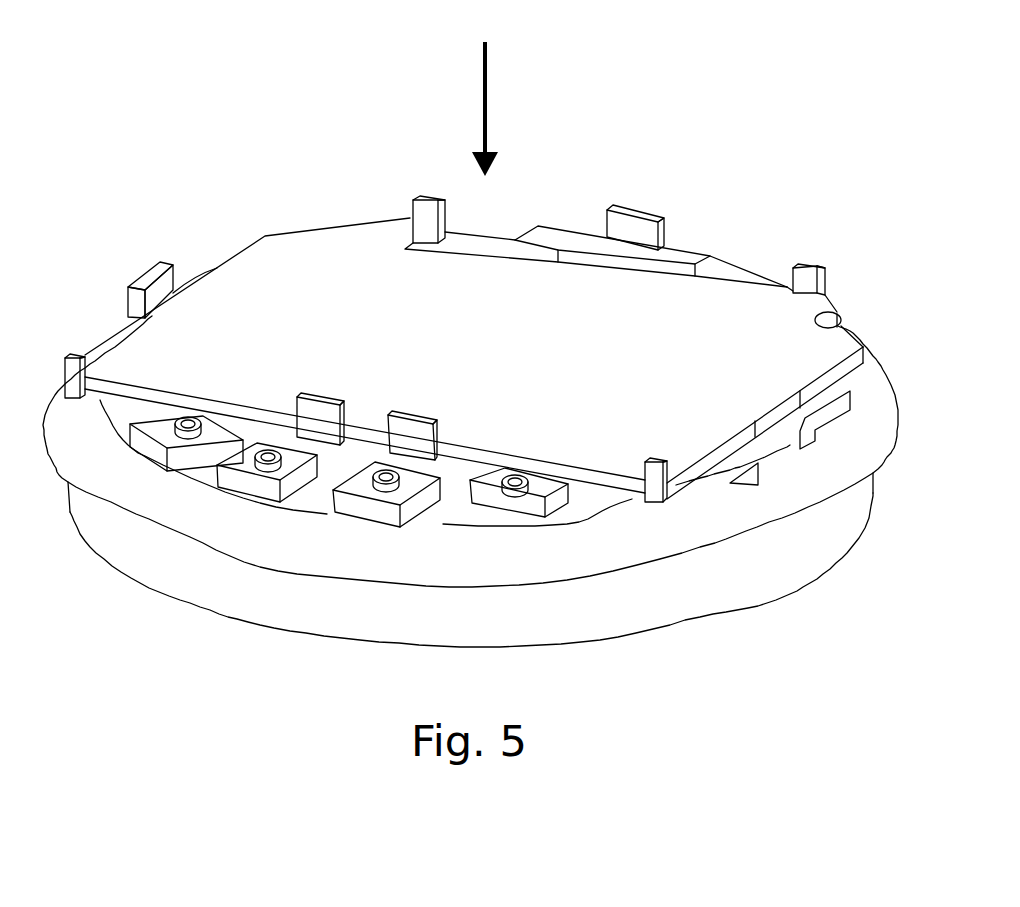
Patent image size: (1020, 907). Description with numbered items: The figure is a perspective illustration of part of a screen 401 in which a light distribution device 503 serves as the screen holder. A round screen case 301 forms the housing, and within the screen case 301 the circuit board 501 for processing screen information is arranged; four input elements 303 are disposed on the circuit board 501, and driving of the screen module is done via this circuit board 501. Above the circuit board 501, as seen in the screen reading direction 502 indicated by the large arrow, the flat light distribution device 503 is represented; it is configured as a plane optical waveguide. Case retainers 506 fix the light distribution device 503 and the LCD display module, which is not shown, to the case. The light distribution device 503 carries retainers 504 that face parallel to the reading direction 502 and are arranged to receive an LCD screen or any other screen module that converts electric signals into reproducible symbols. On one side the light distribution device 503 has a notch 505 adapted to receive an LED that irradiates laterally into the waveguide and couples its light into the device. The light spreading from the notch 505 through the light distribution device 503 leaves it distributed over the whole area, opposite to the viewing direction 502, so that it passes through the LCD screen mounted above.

The screen case 301 is at (156, 594).
The input elements 303 is at (505, 512).
The screen 401 is at (89, 238).
The circuit board 501 is at (587, 504).
The screen reading direction 502 is at (487, 100).
The light distribution device 503 is at (332, 247).
The retainers 504 is at (75, 353).
The notch 505 is at (840, 318).
The case retainers 506 is at (157, 263).